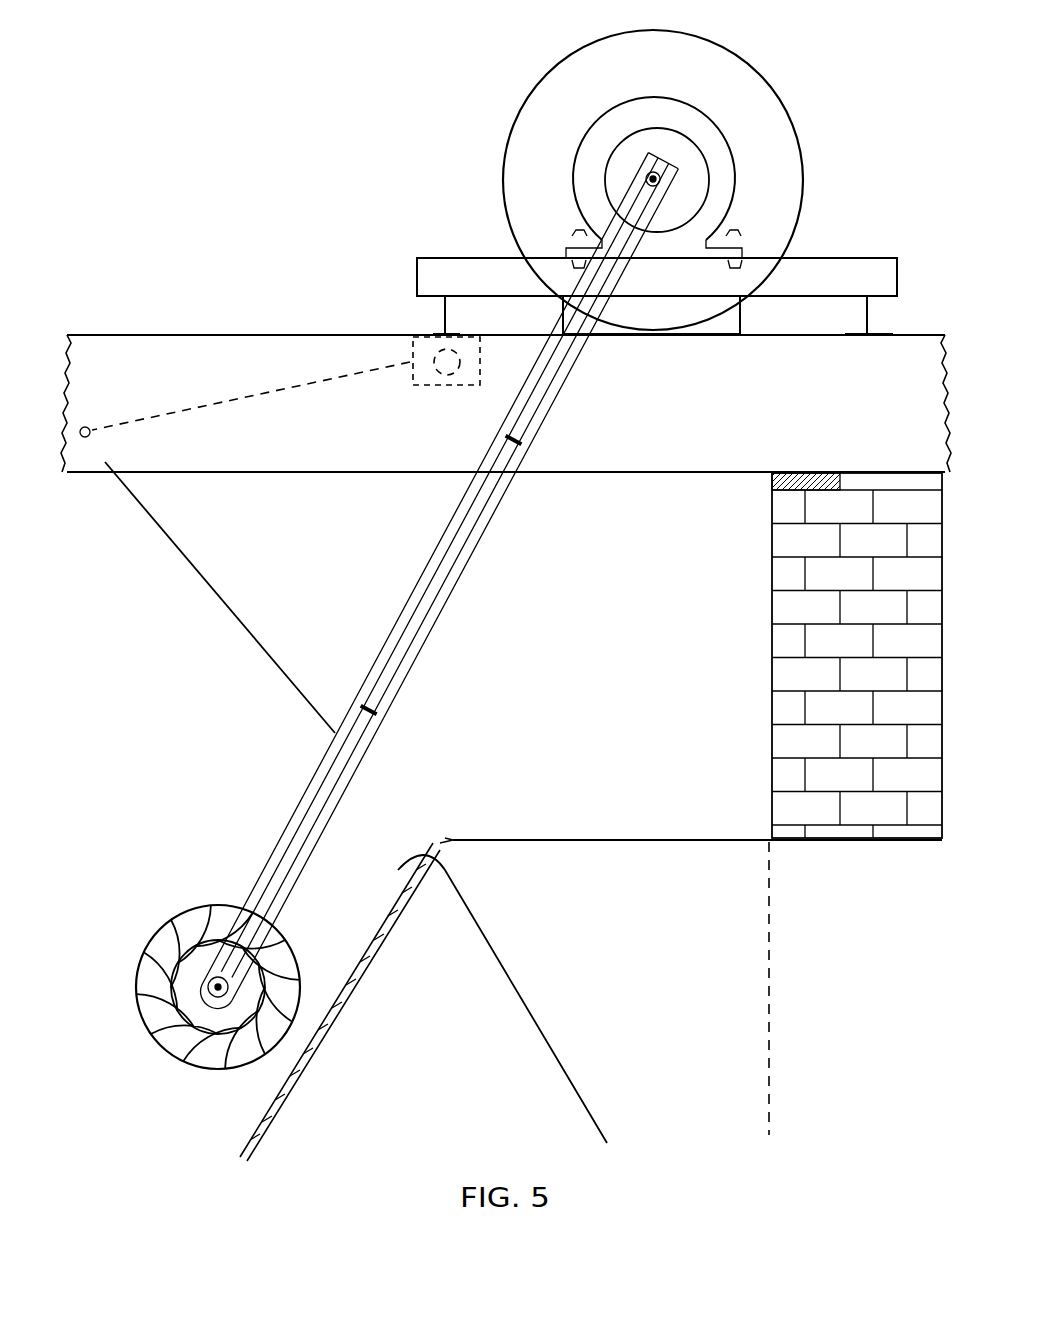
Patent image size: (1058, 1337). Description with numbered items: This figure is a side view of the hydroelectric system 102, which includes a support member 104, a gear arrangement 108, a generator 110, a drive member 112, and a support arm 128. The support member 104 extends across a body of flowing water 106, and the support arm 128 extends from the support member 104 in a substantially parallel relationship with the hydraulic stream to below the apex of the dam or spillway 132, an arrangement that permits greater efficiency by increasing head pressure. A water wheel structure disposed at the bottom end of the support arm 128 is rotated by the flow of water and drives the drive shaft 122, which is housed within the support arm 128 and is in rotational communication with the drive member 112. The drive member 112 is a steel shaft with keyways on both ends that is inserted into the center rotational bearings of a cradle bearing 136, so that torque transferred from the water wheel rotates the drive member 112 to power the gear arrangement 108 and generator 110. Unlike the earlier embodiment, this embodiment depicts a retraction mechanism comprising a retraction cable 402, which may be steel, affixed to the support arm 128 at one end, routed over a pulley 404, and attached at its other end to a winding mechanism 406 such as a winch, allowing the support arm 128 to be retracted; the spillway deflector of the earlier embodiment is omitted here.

The hydroelectric system 102 is at (195, 135).
The support member 104 is at (178, 334).
The body of flowing water 106 is at (665, 836).
The gear arrangement 108 is at (593, 125).
The generator 110 is at (538, 83).
The drive member 112 is at (661, 180).
The drive shaft 122 is at (446, 585).
The support arm 128 is at (548, 413).
The dam or spillway 132 is at (498, 953).
The cradle bearing 136 is at (646, 172).
The retraction cable 402 is at (185, 558).
The pulley 404 is at (92, 436).
The winding mechanism 406 is at (413, 340).